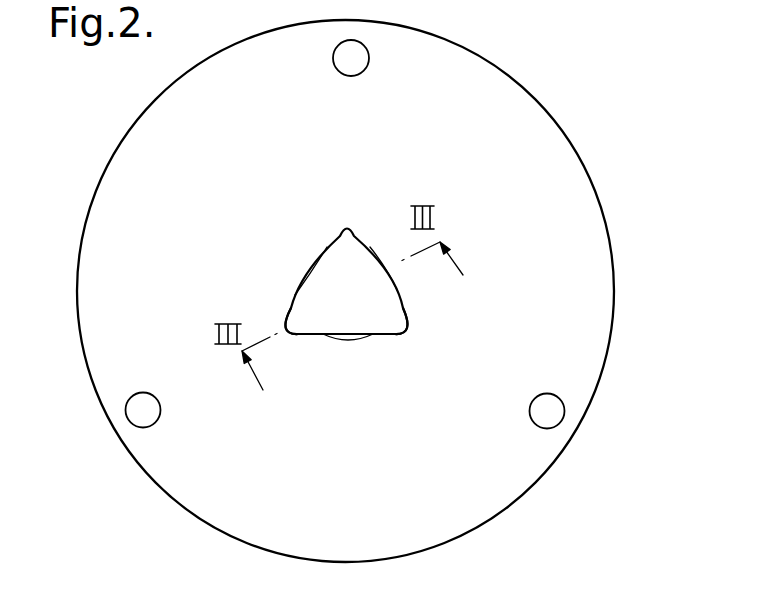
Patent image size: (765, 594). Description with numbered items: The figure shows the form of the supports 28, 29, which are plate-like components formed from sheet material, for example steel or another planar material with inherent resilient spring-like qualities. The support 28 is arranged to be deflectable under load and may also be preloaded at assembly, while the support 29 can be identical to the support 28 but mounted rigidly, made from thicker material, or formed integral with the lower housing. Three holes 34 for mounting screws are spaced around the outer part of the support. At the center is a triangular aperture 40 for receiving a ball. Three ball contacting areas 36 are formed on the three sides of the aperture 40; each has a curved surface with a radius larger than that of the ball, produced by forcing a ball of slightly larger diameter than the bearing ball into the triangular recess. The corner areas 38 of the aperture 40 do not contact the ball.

The support 28 is at (376, 291).
The support 29 is at (562, 163).
The holes 34 is at (355, 61).
The ball contacting areas 36 is at (306, 270).
The areas 38 is at (287, 314).
The central triangular aperture 40 is at (362, 307).